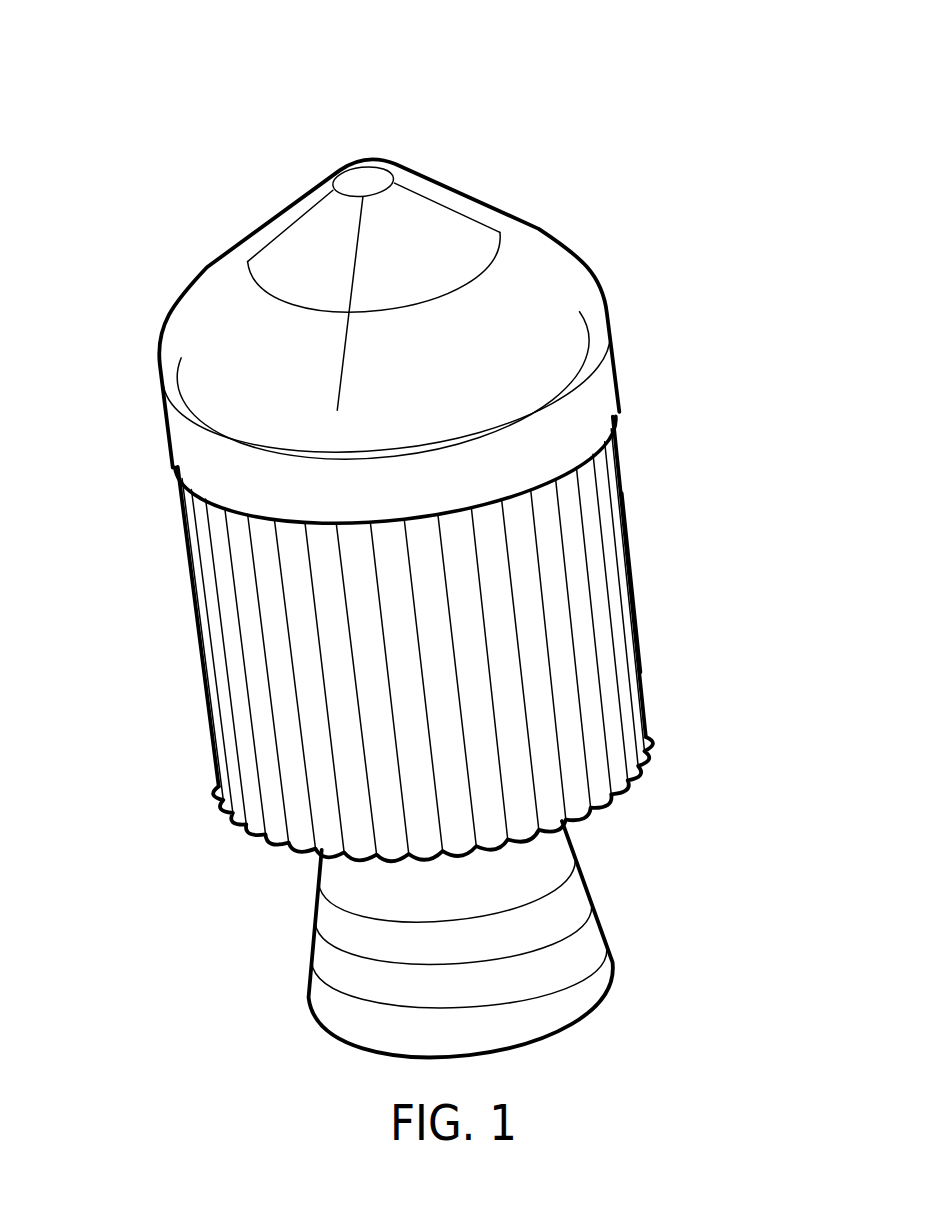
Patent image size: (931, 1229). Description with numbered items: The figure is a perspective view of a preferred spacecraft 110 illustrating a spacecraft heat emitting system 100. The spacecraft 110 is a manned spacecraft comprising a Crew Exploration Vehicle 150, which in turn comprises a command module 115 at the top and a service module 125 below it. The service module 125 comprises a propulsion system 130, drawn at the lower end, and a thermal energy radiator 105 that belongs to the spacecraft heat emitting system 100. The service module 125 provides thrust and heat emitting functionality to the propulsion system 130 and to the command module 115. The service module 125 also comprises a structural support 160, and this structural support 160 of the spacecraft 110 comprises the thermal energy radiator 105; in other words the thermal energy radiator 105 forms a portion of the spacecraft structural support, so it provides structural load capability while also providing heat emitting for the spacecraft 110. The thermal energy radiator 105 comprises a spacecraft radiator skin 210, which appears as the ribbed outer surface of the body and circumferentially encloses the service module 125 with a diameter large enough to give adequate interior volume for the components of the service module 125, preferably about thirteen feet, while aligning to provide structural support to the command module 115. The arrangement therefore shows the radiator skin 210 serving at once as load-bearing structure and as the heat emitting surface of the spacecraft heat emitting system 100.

The spacecraft heat emitting system 100 is at (426, 569).
The thermal energy radiator 105 is at (435, 650).
The spacecraft 110 is at (421, 275).
The command module 115 is at (292, 257).
The service module 125 is at (187, 778).
The propulsion system 130 is at (598, 1047).
The Crew Exploration Vehicle 150 is at (685, 388).
The structural support 160 is at (685, 500).
The spacecraft radiator skin 210 is at (640, 617).